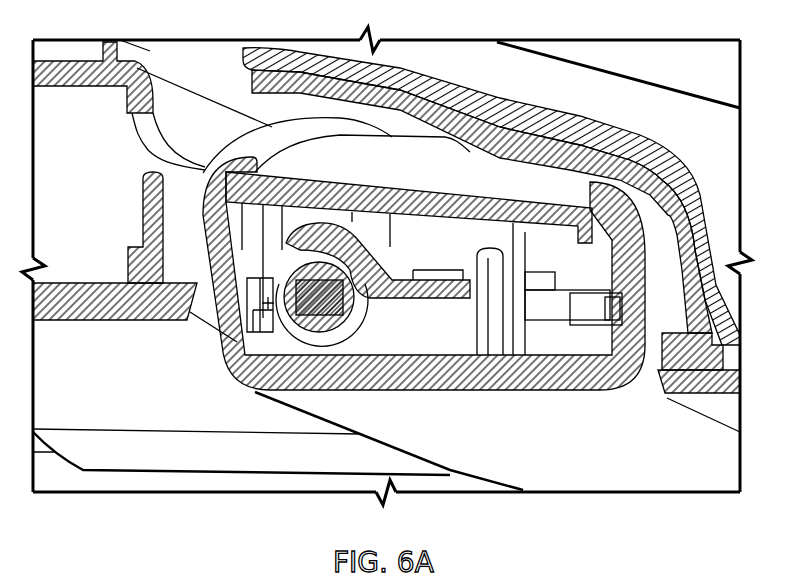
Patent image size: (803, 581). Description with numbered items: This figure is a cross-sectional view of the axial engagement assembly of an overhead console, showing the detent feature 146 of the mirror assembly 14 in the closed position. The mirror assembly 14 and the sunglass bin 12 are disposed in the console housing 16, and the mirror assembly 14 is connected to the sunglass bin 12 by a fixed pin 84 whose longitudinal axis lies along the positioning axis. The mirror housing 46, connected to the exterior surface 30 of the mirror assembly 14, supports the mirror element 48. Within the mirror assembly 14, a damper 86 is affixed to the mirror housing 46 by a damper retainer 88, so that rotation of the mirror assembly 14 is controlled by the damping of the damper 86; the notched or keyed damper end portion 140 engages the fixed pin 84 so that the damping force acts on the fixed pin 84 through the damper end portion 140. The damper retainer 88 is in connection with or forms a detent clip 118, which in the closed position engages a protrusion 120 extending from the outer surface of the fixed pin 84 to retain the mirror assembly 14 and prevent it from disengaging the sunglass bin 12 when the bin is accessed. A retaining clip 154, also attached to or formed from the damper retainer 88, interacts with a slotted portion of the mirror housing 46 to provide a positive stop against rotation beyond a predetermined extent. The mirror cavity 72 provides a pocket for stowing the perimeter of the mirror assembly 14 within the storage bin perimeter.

The sunglass bin 12 is at (720, 160).
The mirror assembly 14 is at (635, 470).
The console housing 16 is at (210, 457).
The exterior surface 30 is at (590, 438).
The mirror housing 46 is at (190, 205).
The mirror element 48 is at (522, 178).
The mirror cavity 72 is at (433, 166).
The fixed pin 84 is at (255, 355).
The damper 86 is at (390, 338).
The damper retainer 88 is at (436, 308).
The detent clip 118 is at (330, 226).
The protrusion 120 is at (296, 240).
The damper end portion 140 is at (320, 370).
The detent feature 146 is at (276, 250).
The retaining clip 154 is at (232, 342).